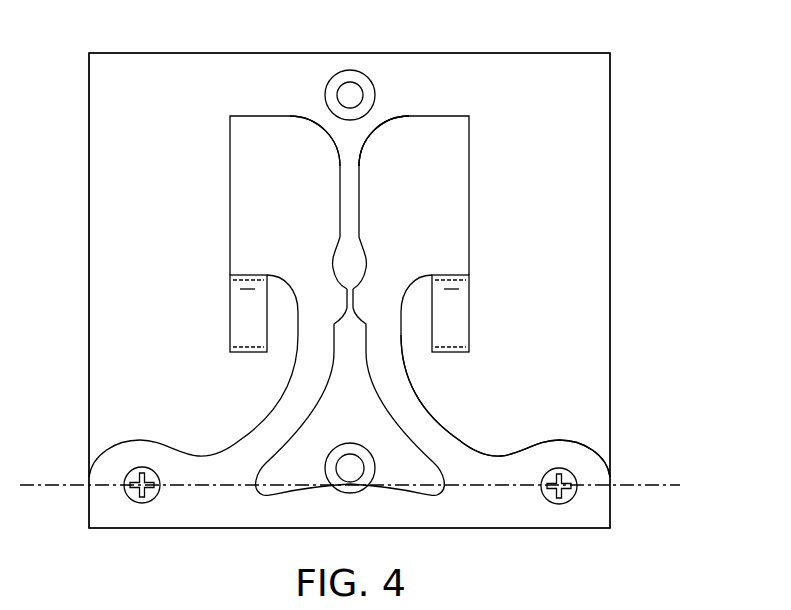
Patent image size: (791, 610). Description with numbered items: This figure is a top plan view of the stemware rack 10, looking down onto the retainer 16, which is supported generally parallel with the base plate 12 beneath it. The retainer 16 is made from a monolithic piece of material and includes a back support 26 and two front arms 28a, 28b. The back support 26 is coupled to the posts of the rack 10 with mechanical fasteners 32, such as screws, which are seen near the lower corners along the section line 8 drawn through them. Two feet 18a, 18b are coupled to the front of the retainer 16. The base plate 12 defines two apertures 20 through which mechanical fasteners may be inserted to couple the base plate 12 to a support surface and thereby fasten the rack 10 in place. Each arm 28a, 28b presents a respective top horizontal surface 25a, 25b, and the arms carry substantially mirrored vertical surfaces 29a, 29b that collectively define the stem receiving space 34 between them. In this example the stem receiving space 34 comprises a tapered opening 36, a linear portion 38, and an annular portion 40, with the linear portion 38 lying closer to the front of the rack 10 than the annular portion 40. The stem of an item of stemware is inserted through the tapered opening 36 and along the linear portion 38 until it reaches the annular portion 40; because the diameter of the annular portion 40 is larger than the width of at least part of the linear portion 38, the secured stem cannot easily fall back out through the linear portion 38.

The section line 8- 8 is at (672, 492).
The stemware rack 10 is at (178, 33).
The base plate 12 is at (566, 91).
The retainer 16 is at (552, 455).
The foot 18a is at (462, 307).
The foot 18b is at (236, 304).
The aperture 20 is at (322, 88).
The top horizontal surface 25a is at (428, 237).
The top horizontal surface 25b is at (313, 245).
The back support 26 is at (216, 519).
The front arm 28a is at (449, 161).
The front arm 28b is at (299, 161).
The vertical surface 29a is at (357, 229).
The vertical surface 29b is at (343, 143).
The mechanical fastener 32 is at (130, 475).
The stem receiving space 34 is at (339, 195).
The tapered opening 36 is at (366, 122).
The linear portion 38 is at (360, 183).
The annular portion 40 is at (333, 258).